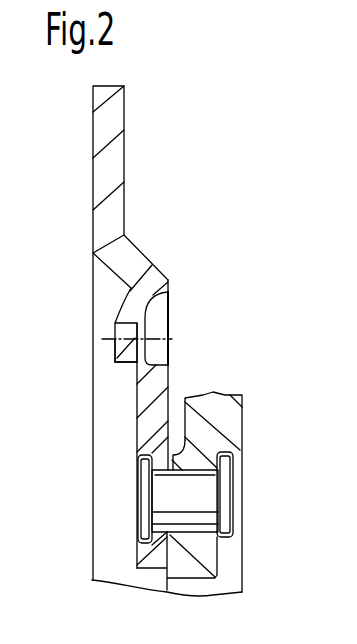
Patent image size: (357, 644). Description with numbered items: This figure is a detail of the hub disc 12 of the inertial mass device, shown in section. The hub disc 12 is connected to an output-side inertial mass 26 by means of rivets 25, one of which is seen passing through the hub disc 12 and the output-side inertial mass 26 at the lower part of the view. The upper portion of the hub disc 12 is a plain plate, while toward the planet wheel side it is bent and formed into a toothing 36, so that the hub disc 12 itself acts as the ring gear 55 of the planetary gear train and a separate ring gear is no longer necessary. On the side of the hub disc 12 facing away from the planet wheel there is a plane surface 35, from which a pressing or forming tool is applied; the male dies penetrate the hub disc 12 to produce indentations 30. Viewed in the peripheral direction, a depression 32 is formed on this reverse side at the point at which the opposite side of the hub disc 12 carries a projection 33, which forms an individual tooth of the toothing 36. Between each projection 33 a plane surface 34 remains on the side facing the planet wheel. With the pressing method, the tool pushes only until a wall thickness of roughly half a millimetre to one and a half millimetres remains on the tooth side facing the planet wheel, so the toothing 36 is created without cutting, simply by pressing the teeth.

The hub disc 12 is at (119, 177).
The indentations 30 is at (160, 337).
The depression 32 is at (162, 305).
The plane surface 35 is at (170, 355).
The ring gear 55 is at (133, 296).
The projection 33 is at (128, 308).
The toothing 36 is at (117, 355).
The plane surface 34 is at (127, 357).
The output-side inertial mass 26 is at (241, 423).
The rivets 25 is at (227, 492).